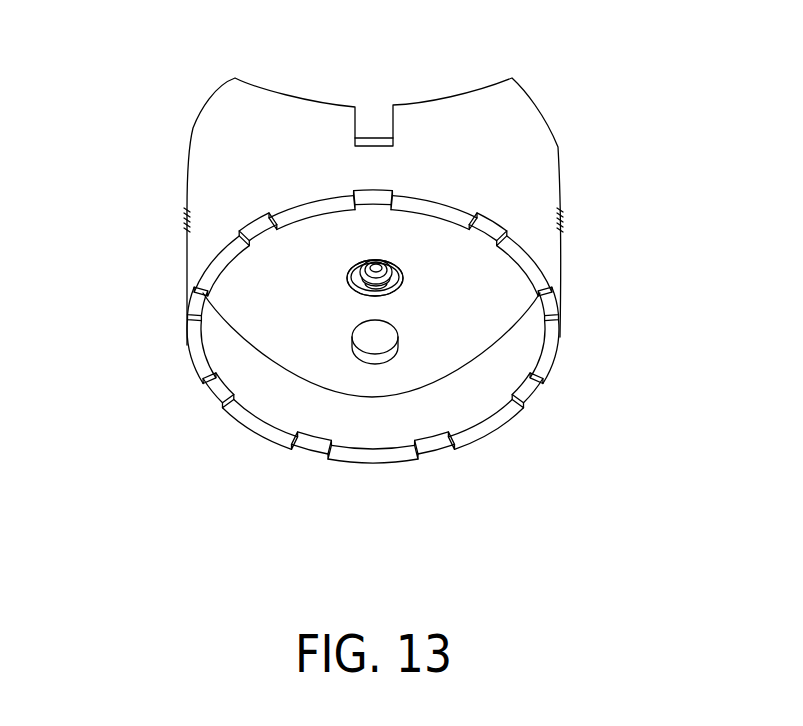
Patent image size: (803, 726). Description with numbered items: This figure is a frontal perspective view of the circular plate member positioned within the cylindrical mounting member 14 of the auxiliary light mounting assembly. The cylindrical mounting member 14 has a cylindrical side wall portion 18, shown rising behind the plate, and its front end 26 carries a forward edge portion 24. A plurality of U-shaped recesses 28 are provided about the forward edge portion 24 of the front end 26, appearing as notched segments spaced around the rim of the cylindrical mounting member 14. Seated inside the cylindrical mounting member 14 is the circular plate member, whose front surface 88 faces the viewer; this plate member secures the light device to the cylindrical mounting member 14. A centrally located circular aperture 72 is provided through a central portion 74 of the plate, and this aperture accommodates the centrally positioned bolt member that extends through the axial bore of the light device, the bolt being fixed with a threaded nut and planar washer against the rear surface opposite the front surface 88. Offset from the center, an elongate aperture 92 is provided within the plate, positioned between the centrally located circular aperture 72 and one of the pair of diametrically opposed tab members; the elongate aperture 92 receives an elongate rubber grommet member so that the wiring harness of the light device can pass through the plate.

The cylindrical mounting member 14 is at (505, 438).
The cylindrical side wall portion 18 is at (481, 182).
The forward edge portion 24 is at (531, 276).
The front end 26 is at (471, 458).
The U-shaped recesses 28 is at (543, 393).
The centrally located circular aperture 72 is at (350, 290).
The central portion 74 is at (344, 275).
The front surface 88 is at (375, 258).
The elongate aperture 92 is at (350, 345).